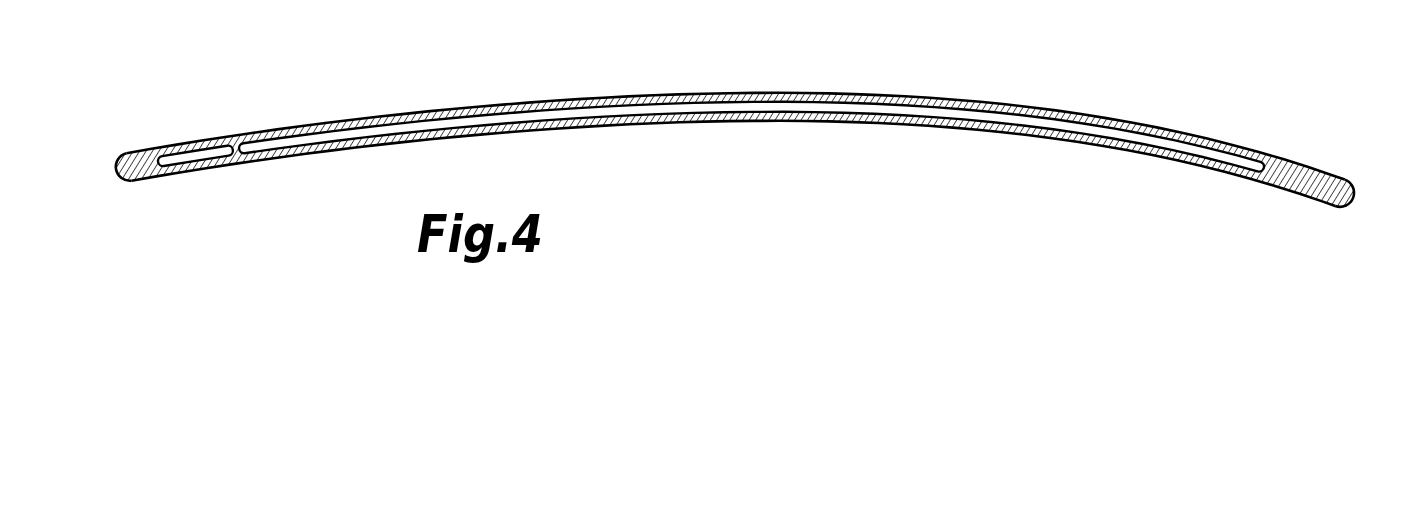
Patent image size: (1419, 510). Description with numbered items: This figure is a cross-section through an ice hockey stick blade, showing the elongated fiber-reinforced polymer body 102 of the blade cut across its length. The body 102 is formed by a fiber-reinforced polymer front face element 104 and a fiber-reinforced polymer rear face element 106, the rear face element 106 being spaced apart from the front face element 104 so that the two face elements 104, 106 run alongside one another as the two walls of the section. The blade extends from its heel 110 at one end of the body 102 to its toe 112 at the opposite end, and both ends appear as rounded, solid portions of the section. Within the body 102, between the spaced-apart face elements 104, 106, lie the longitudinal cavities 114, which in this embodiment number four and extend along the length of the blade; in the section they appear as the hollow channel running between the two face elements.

The elongated fiber-reinforced polymer body 102 is at (1297, 180).
The front face element 104 is at (799, 124).
The rear face element 106 is at (684, 96).
The heel 110 is at (174, 187).
The toe 112 is at (1360, 179).
The longitudinal cavities 114 is at (199, 152).